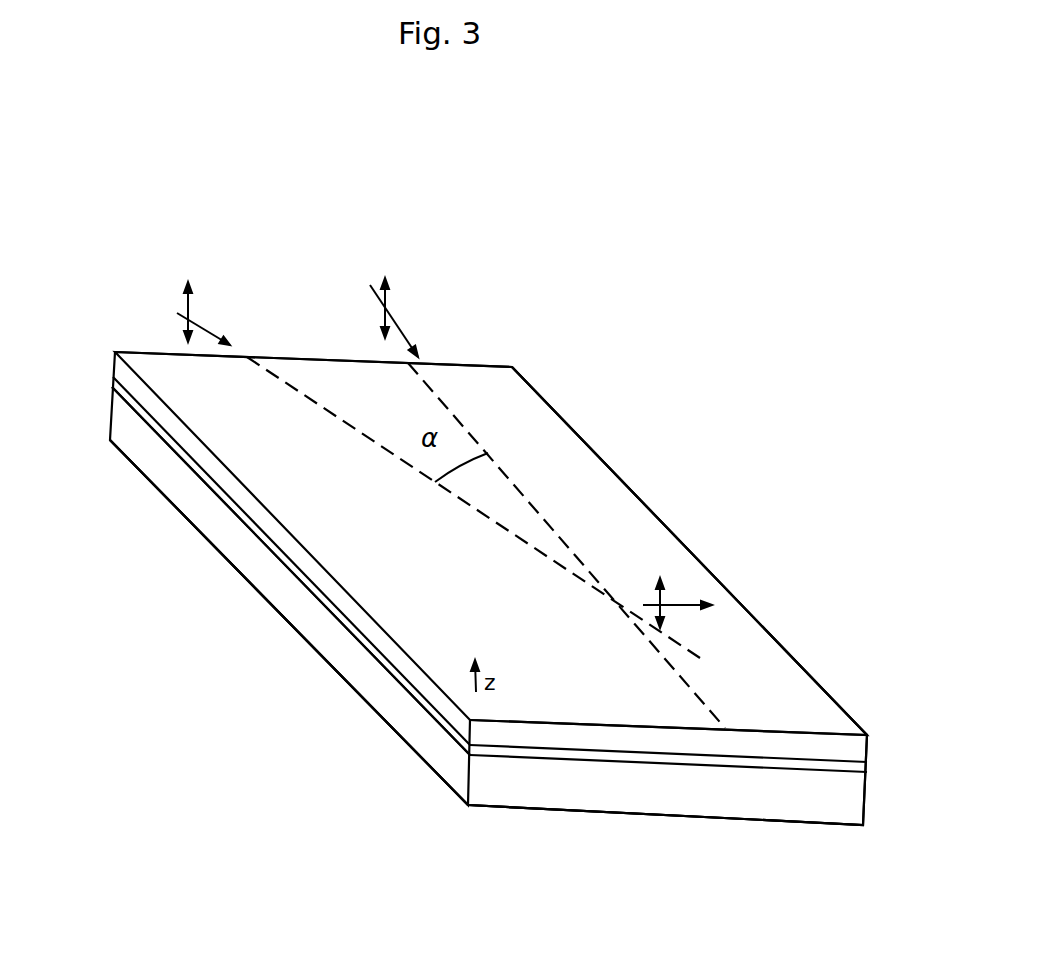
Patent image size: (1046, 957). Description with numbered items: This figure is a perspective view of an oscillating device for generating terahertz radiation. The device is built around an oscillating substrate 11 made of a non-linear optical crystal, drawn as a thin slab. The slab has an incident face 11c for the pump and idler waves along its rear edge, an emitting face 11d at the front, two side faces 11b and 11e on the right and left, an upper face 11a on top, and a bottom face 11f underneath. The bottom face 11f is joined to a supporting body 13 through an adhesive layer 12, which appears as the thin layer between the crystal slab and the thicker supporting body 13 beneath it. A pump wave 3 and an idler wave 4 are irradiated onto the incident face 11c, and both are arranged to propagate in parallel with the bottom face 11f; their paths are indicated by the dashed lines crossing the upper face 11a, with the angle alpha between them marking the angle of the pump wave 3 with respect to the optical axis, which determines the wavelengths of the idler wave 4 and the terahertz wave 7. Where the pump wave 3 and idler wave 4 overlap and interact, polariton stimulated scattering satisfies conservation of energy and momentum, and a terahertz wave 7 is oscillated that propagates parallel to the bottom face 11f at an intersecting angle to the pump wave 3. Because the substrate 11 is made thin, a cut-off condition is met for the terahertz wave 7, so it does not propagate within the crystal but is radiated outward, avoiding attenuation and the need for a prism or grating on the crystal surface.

The oscillating substrate 11 is at (587, 440).
The upper face 11a is at (513, 407).
The side face 11b is at (628, 487).
The incident face 11c is at (317, 360).
The emitting face 11d is at (843, 748).
The side face 11e is at (355, 638).
The bottom face 11f is at (398, 683).
The adhesive layer 12 is at (110, 377).
The supporting body 13 is at (143, 463).
The pump wave 3 is at (387, 310).
The idler wave 4 is at (193, 322).
The terahertz wave 7 is at (685, 603).